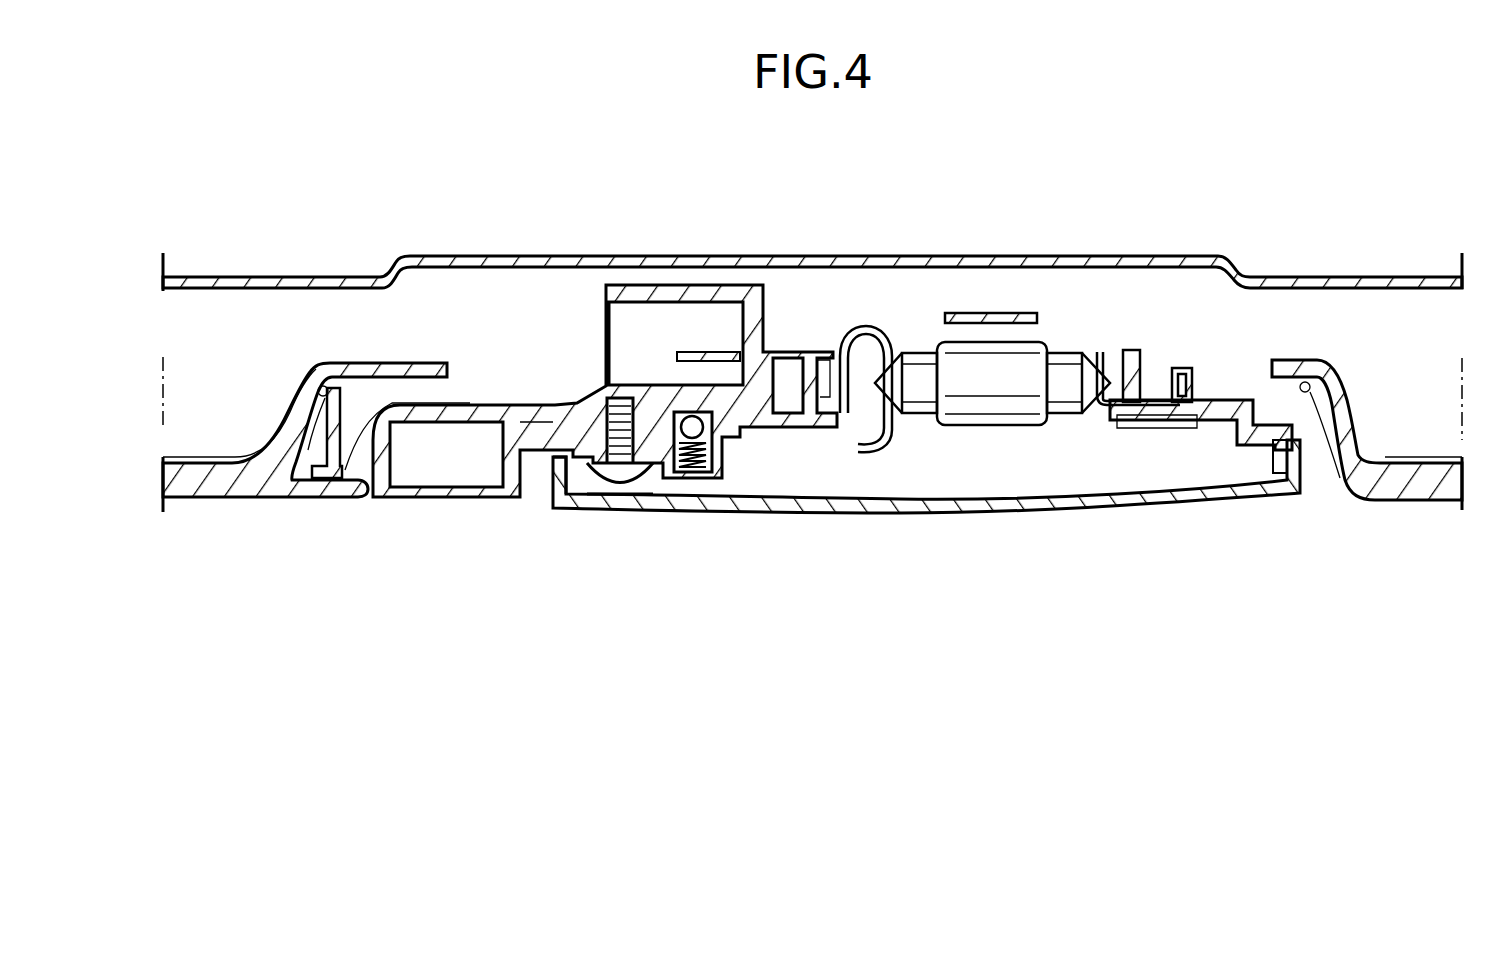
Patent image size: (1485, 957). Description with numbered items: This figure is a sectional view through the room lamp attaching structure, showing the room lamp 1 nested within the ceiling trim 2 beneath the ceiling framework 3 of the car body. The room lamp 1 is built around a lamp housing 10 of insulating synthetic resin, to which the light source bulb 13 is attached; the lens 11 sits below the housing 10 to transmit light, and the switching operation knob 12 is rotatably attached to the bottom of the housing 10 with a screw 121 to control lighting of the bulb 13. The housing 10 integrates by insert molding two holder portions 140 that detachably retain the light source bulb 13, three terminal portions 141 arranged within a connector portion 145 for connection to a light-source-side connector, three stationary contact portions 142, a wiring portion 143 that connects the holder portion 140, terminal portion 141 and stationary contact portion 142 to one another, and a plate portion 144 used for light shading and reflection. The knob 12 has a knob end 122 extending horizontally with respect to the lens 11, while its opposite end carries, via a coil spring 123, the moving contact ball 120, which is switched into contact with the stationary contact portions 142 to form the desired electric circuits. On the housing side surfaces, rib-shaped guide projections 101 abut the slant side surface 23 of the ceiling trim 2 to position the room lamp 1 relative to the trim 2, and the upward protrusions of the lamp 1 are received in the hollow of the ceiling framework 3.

The room lamp 1 is at (906, 515).
The ceiling trim 2 is at (812, 452).
The ceiling framework 3 is at (1197, 250).
The lamp housing 10 is at (818, 369).
The lens 11 is at (934, 514).
The switching operation knob 12 is at (417, 498).
The light source bulb 13 is at (1057, 346).
The slant side surface 23 is at (314, 384).
The guide projection 101 is at (333, 426).
The moving contact ball 120 is at (699, 432).
The screw 121 is at (616, 508).
The knob end 122 is at (553, 465).
The coil spring 123 is at (688, 474).
The holder portion 140 is at (884, 331).
The terminal portion 141 is at (686, 351).
The stationary contact portion 142 is at (650, 403).
The wiring portion 143 is at (800, 351).
The plate portion 144 is at (993, 312).
The connector portion 145 is at (716, 285).